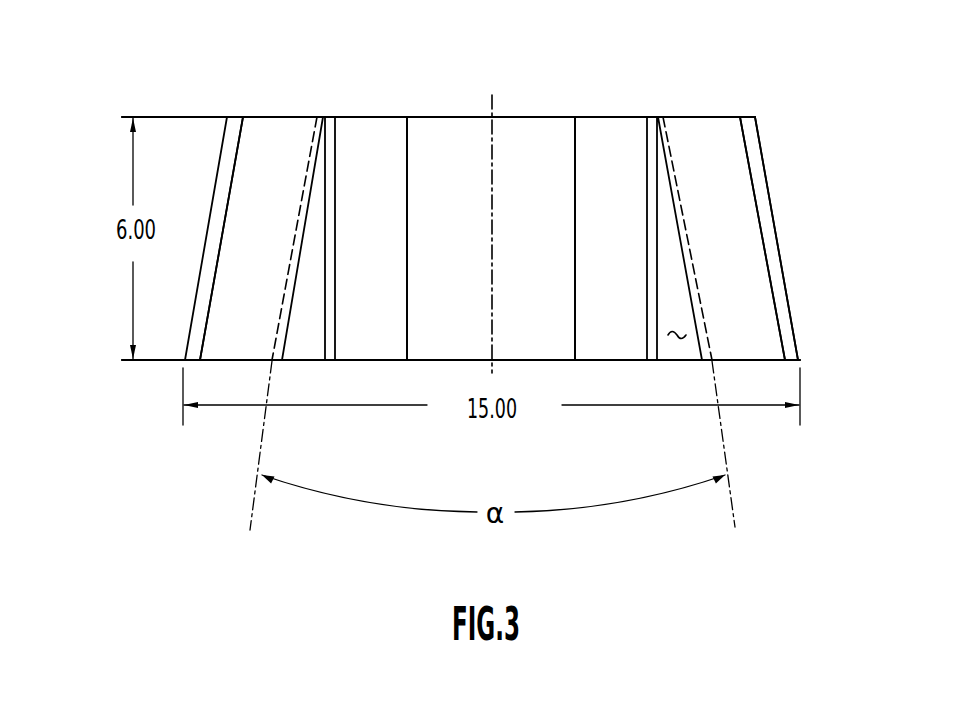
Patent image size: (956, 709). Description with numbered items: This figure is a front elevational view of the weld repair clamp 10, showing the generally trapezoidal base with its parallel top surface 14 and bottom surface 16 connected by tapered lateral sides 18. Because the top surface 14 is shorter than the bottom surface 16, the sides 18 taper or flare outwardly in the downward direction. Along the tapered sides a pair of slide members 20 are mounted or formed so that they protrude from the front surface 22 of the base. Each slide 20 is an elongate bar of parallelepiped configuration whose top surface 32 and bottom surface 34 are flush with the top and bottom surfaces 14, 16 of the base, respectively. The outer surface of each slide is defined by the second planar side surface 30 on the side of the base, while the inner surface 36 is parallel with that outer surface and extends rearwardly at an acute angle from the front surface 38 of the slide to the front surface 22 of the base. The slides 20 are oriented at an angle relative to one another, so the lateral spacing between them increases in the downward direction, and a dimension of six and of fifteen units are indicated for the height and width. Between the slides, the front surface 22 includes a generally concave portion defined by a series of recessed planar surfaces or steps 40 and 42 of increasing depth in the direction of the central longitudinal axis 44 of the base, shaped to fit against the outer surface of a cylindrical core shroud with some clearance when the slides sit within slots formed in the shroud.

The weld repair clamp 10 is at (228, 96).
The top surface 14 is at (550, 117).
The bottom surface 16 is at (460, 360).
The tapered lateral sides 18 is at (208, 200).
The slide members 20 is at (245, 372).
The front surface of the base 22 is at (676, 342).
The second planar side surface 30 is at (194, 304).
The top surface of the slide 32 is at (282, 117).
The bottom surface of the slide 34 is at (220, 362).
The inner surface of the slide 36 is at (312, 185).
The front surface of the slide 38 is at (247, 240).
The recessed planar surface 40 is at (360, 240).
The recessed planar surface 42 is at (519, 240).
The central longitudinal axis 44 is at (490, 95).